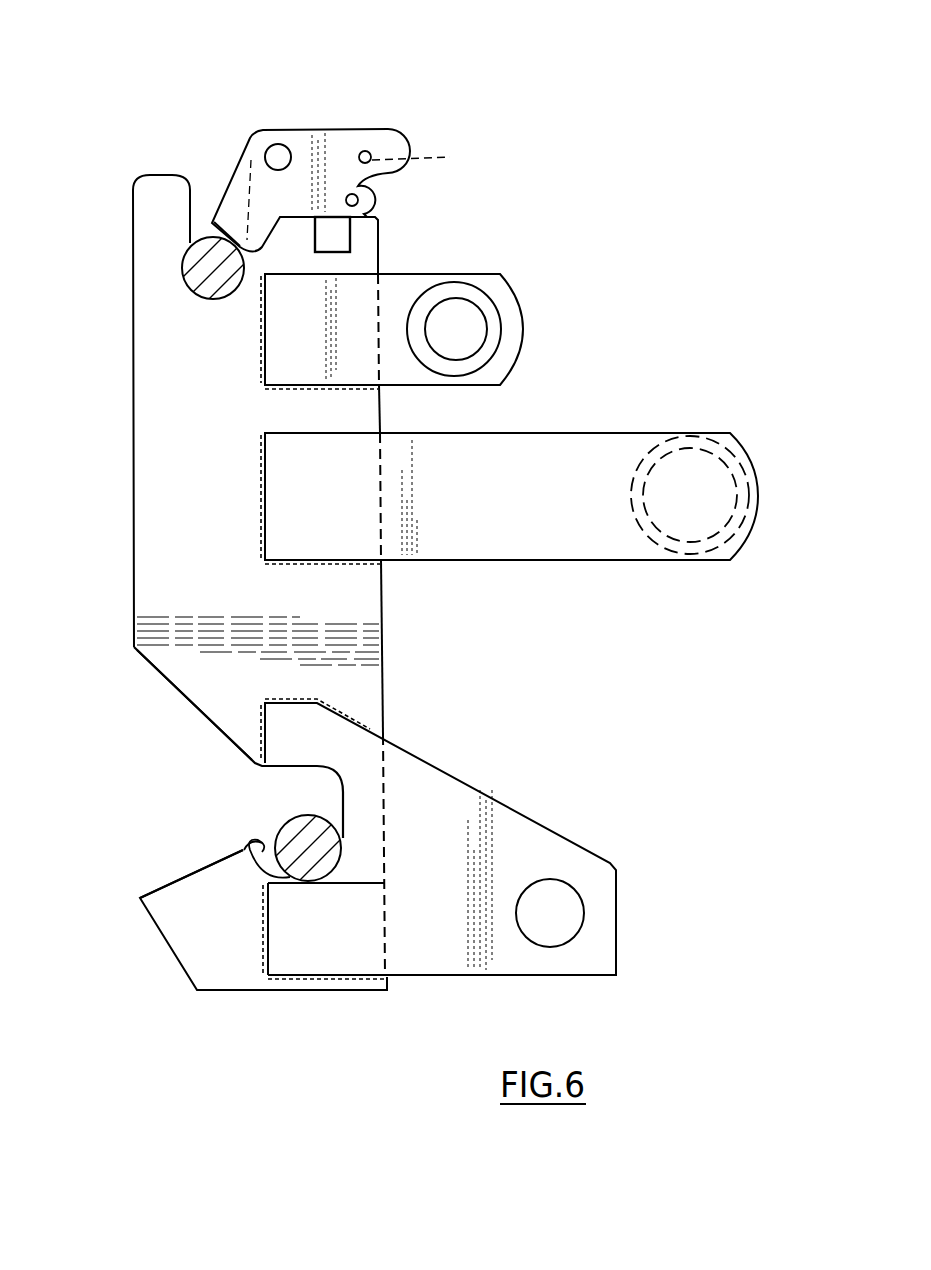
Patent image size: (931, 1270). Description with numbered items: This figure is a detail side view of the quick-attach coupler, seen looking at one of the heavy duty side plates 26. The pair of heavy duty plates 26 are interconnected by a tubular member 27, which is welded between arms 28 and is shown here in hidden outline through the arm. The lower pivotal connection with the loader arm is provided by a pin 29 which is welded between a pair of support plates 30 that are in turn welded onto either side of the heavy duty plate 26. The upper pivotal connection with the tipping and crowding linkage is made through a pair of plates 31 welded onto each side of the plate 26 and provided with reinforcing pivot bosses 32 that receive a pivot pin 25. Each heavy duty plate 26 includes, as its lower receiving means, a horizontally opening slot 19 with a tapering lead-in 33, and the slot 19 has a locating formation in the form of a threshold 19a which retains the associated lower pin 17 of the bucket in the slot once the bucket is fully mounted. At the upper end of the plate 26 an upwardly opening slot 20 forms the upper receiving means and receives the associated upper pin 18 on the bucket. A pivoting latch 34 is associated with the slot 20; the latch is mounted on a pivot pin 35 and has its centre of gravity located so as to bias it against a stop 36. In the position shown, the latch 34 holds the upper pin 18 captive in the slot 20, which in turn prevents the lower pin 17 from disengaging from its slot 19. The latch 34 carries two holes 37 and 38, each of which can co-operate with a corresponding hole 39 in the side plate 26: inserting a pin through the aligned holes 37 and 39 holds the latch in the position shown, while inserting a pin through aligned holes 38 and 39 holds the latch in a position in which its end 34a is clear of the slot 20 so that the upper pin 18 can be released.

The lower pin 17 is at (330, 845).
The upper pin 18 is at (198, 233).
The horizontally opening slot 19 is at (253, 848).
The threshold 19a is at (262, 842).
The upwardly opening slot 20 is at (188, 192).
The pivot pin 25 is at (468, 338).
The heavy duty side plate 26 is at (227, 418).
The tubular member 27 is at (652, 450).
The arm 28 is at (468, 542).
The pin 29 is at (545, 892).
The support plate 30 is at (430, 960).
The plate 31 is at (417, 283).
The reinforcing pivot boss 32 is at (485, 305).
The tapering lead-in 33 is at (208, 720).
The pivoting latch 34 is at (262, 207).
The end of the latch 34a is at (217, 218).
The pivot pin 35 is at (283, 155).
The stop 36 is at (333, 233).
The hole 37 is at (367, 150).
The hole 38 is at (356, 200).
The hole 39 is at (435, 154).